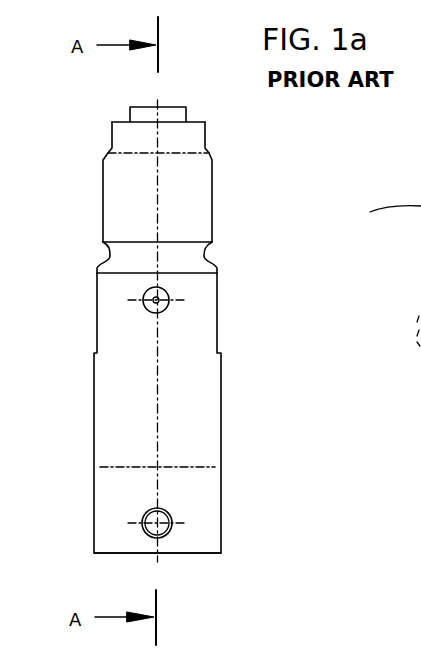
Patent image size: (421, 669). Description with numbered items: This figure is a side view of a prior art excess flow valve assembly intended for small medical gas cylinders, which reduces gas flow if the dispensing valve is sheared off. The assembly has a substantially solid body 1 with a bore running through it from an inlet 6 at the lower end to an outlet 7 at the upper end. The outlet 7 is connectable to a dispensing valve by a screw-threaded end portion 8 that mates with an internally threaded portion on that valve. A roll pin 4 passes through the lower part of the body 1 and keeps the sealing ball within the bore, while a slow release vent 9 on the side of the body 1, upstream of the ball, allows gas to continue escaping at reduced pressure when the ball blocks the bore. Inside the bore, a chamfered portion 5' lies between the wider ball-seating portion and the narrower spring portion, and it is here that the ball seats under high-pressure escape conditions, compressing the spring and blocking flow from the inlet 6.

The body 1 is at (122, 366).
The roll pin 4 is at (163, 537).
The inlet 6 is at (115, 555).
The outlet 7 is at (170, 106).
The screw-threaded end portion 8 is at (210, 210).
The slow release vent 9 is at (167, 310).
The chamfered portion 5' is at (391, 431).